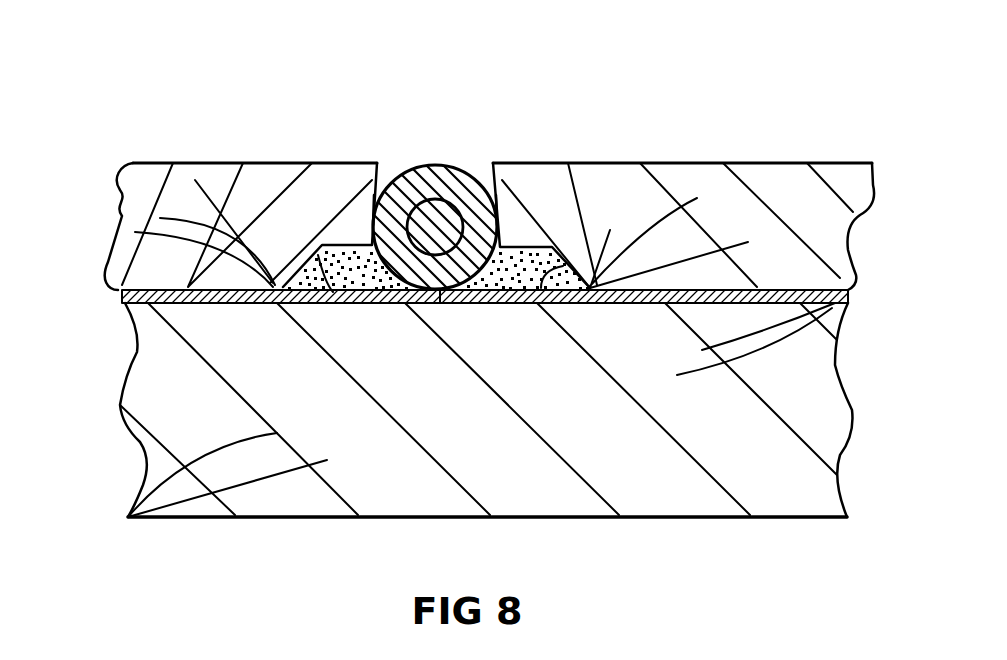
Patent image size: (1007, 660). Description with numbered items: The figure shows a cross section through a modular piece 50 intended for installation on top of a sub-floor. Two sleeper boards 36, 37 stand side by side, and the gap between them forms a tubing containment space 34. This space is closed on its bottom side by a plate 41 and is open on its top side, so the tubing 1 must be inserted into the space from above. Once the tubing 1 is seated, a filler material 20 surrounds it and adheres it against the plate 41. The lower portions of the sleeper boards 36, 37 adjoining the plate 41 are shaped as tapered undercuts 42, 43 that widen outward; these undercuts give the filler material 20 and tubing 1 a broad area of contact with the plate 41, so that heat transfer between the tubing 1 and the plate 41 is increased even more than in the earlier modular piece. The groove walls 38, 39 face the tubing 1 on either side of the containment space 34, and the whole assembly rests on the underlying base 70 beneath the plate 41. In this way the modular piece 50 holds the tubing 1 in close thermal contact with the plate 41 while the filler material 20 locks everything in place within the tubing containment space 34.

The tubing 1 is at (446, 178).
The filler material 20 is at (355, 262).
The tubing containment space 34 is at (478, 151).
The sleeper board 36 is at (810, 227).
The sleeper board 37 is at (153, 237).
The right groove wall 38 is at (488, 208).
The left groove wall 39 is at (378, 195).
The plate 41 is at (440, 304).
The tapered undercut 42 is at (541, 290).
The tapered undercut 43 is at (332, 290).
The modular piece 50 is at (165, 144).
The base plate 70 is at (743, 518).